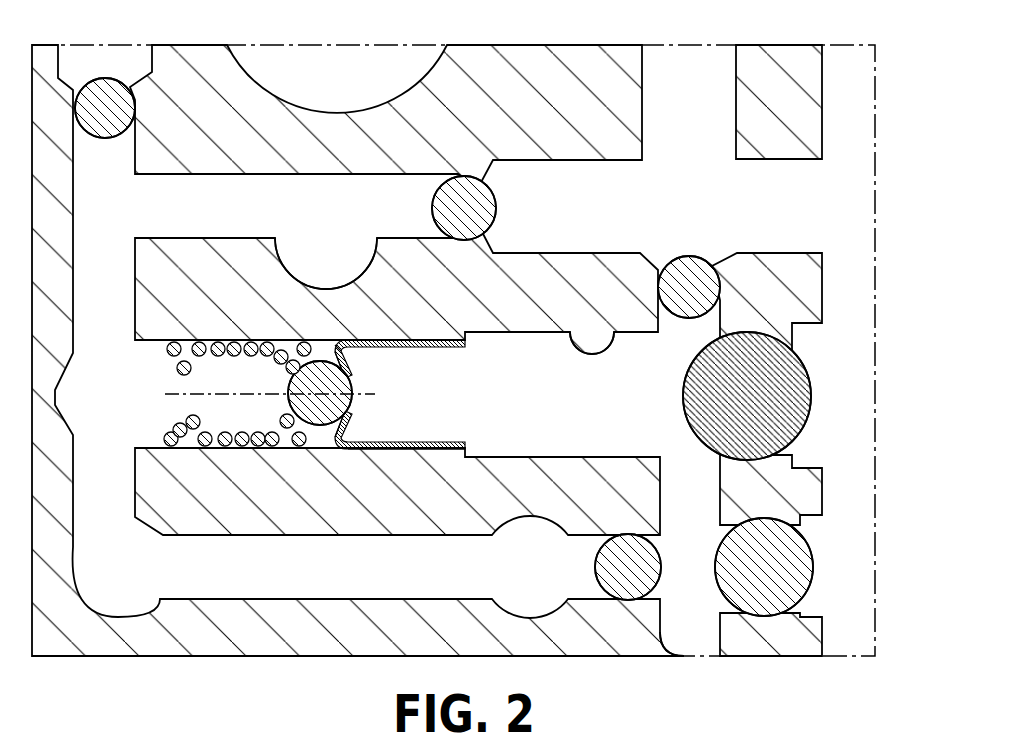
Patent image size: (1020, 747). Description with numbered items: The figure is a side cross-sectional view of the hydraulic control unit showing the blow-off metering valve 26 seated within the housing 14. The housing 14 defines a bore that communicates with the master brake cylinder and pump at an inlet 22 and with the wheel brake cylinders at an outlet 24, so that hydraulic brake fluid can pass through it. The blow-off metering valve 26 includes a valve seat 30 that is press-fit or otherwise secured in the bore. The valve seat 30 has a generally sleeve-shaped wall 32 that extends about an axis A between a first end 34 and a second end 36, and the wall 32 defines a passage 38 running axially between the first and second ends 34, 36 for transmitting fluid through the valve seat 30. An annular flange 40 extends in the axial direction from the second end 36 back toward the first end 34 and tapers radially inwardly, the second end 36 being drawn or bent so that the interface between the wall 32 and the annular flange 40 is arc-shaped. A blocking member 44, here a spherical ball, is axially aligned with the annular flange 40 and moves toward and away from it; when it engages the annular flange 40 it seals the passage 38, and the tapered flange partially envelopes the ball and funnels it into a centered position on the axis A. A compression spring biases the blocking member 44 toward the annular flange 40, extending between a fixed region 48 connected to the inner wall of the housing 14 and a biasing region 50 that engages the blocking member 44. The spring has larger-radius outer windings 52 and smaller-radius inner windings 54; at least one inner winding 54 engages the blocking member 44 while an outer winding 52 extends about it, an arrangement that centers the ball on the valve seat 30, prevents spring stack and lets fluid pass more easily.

The housing 14 is at (590, 42).
The inlet 22 is at (684, 657).
The outlet 24 is at (322, 287).
The blow-off metering valve 26 is at (317, 462).
The valve seat 30 is at (443, 360).
The sleeve-shaped wall 32 is at (430, 456).
The first end 34 is at (466, 344).
The second end 36 is at (326, 342).
The passage 38 is at (427, 428).
The annular flange 40 is at (350, 364).
The blocking member 44 is at (328, 453).
The fixed region 48 is at (203, 285).
The biasing region 50 is at (301, 343).
The outer windings 52 is at (232, 463).
The inner windings 54 is at (190, 444).
The axis A is at (260, 397).